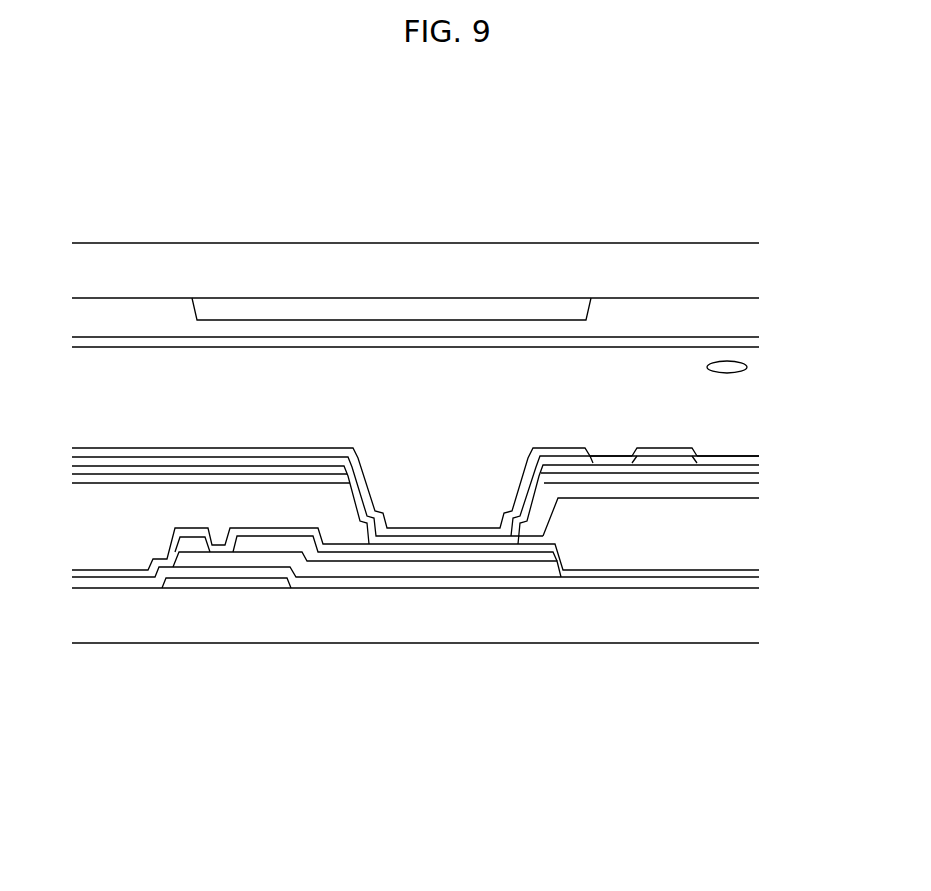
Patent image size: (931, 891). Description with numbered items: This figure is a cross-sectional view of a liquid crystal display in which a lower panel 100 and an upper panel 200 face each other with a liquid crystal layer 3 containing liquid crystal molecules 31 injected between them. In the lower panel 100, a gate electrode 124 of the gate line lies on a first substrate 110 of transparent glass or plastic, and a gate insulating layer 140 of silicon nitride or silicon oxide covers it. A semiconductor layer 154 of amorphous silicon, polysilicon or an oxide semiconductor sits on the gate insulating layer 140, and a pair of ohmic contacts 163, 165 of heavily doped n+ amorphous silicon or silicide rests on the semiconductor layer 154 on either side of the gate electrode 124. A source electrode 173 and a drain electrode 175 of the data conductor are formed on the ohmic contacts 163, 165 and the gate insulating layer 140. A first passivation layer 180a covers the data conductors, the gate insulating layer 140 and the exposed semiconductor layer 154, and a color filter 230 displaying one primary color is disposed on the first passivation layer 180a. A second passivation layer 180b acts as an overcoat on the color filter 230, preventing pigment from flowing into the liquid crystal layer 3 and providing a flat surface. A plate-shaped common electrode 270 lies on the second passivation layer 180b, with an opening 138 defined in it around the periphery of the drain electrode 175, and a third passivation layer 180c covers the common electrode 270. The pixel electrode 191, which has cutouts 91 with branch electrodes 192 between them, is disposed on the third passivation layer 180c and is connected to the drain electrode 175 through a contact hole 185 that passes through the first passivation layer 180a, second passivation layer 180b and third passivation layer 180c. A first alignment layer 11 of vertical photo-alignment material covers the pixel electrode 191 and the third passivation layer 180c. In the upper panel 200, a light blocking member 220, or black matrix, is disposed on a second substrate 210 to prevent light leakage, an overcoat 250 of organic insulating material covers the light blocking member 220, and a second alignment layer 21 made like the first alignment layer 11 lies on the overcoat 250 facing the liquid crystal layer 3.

The liquid crystal layer 3 is at (766, 353).
The first alignment layer 11 is at (101, 452).
The second alignment layer 21 is at (279, 346).
The liquid crystal molecules 31 is at (726, 361).
The cutouts 91 is at (628, 455).
The lower panel 100 is at (766, 450).
The first substrate 110 is at (728, 625).
The gate electrode 124 is at (223, 583).
The opening 138 is at (342, 477).
The gate insulating layer 140 is at (141, 585).
The semiconductor layer 154 is at (333, 572).
The ohmic contact 163 is at (188, 550).
The ohmic contact 165 is at (440, 565).
The source electrode 173 is at (195, 538).
The drain electrode 175 is at (512, 553).
The first passivation layer 180a is at (575, 577).
The second passivation layer 180b is at (100, 538).
The third passivation layer 180c is at (733, 470).
The contact hole 185 is at (388, 548).
The pixel electrode 191 is at (578, 458).
The branch electrodes 192 is at (667, 452).
The upper panel 200 is at (766, 243).
The second substrate 210 is at (601, 265).
The light blocking member 220 is at (398, 308).
The color filter 230 is at (612, 545).
The overcoat 250 is at (143, 315).
The common electrode 270 is at (692, 480).